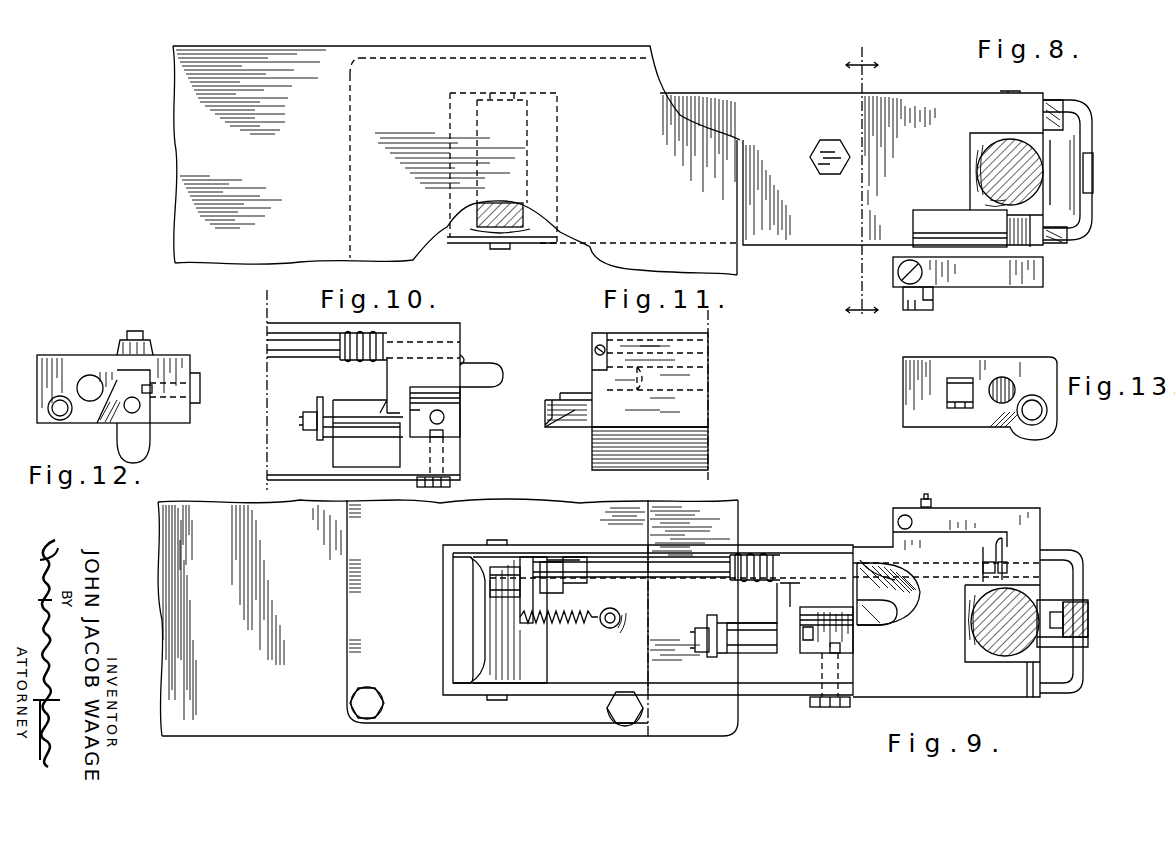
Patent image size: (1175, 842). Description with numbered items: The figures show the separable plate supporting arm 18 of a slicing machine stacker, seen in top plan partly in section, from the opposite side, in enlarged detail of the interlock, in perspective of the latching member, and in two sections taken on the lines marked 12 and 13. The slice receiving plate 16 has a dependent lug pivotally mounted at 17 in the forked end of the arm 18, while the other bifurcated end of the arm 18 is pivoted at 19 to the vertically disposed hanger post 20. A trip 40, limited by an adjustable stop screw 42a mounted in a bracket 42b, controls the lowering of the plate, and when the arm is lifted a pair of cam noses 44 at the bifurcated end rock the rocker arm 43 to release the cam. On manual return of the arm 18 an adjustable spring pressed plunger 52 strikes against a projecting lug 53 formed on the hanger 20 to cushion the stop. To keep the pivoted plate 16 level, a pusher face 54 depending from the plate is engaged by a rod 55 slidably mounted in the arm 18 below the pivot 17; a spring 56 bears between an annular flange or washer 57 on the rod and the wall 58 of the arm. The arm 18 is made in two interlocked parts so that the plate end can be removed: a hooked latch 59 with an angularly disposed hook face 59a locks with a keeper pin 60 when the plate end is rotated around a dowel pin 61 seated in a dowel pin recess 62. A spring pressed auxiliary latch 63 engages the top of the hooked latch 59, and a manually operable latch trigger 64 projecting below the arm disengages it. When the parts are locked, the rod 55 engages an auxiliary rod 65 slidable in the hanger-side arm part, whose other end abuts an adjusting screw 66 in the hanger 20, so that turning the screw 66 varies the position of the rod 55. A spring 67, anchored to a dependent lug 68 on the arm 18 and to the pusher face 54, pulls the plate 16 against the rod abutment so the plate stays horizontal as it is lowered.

In FIG. 8, the reciprocating object holder 12 is at (878, 185).
In FIG. 8, the guide shaft 13 is at (853, 185).
In FIG. 8, the slice receiving plate 16 is at (190, 243).
In FIG. 9, the slice receiving plate 16 is at (287, 727).
In FIG. 8, the pivot 17 is at (497, 250).
In FIG. 9, the pivot 17 is at (505, 553).
In FIG. 8, the plate supporting arm 18 is at (820, 233).
In FIG. 10, the plate supporting arm 18 is at (275, 405).
In FIG. 9, the plate supporting arm 18 is at (805, 545).
In FIG. 8, the pivot 19 is at (1005, 94).
In FIG. 8, the hanger post 20 is at (975, 162).
In FIG. 8, the trip 40 is at (918, 305).
In FIG. 9, the adjustable stop screw 42a is at (904, 515).
In FIG. 9, the bracket 42b is at (947, 525).
In FIG. 8, the rocker arm 43 is at (1085, 200).
In FIG. 9, the rocker arm 43 is at (1085, 618).
In FIG. 8, the cam noses 44 is at (1045, 103).
In FIG. 8, the spring pressed plunger 52 is at (1005, 220).
In FIG. 8, the projecting lug 53 is at (1035, 212).
In FIG. 9, the pusher face 54 is at (535, 560).
In FIG. 10, the rod 55 is at (293, 343).
In FIG. 12, the rod 55 is at (60, 412).
In FIG. 9, the rod 55 is at (600, 557).
In FIG. 10, the spring 56 is at (362, 360).
In FIG. 9, the spring 56 is at (760, 555).
In FIG. 10, the annular flange or washer 57 is at (340, 355).
In FIG. 9, the annular flange or washer 57 is at (730, 557).
In FIG. 10, the wall 58 is at (385, 393).
In FIG. 9, the wall 58 is at (780, 588).
In FIG. 11, the hooked latch 59 is at (575, 398).
In FIG. 13, the hooked latch 59 is at (965, 378).
In FIG. 9, the hooked latch 59 is at (825, 630).
In FIG. 11, the hook face 59a is at (572, 418).
In FIG. 10, the keeper pin 60 is at (444, 430).
In FIG. 12, the keeper pin 60 is at (145, 382).
In FIG. 9, the keeper pin 60 is at (830, 652).
In FIG. 10, the dowel pin 61 is at (473, 367).
In FIG. 12, the dowel pin 61 is at (90, 383).
In FIG. 9, the dowel pin 61 is at (883, 628).
In FIG. 11, the dowel pin recess 62 is at (645, 372).
In FIG. 13, the dowel pin recess 62 is at (1012, 380).
In FIG. 9, the dowel pin recess 62 is at (900, 605).
In FIG. 10, the auxiliary latch 63 is at (410, 417).
In FIG. 12, the auxiliary latch 63 is at (135, 405).
In FIG. 9, the auxiliary latch 63 is at (795, 645).
In FIG. 10, the latch trigger 64 is at (312, 435).
In FIG. 12, the latch trigger 64 is at (145, 443).
In FIG. 9, the latch trigger 64 is at (708, 650).
In FIG. 11, the auxiliary rod 65 is at (598, 348).
In FIG. 13, the auxiliary rod 65 is at (1030, 418).
In FIG. 9, the auxiliary rod 65 is at (873, 570).
In FIG. 9, the adjusting screw 66 is at (1003, 566).
In FIG. 9, the spring 67 is at (583, 627).
In FIG. 9, the dependent lug 68 is at (628, 603).